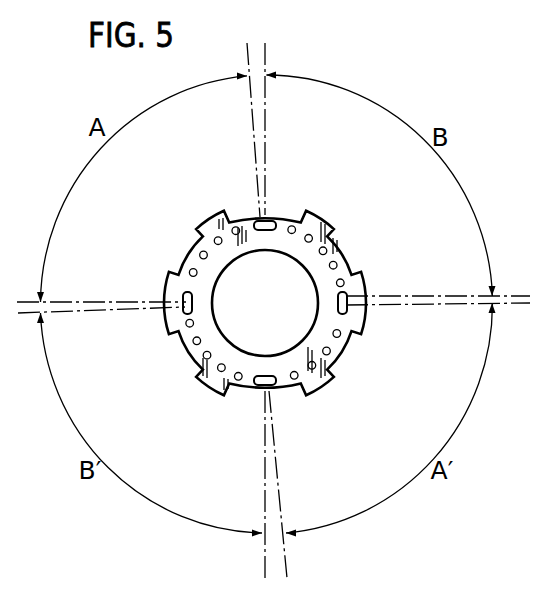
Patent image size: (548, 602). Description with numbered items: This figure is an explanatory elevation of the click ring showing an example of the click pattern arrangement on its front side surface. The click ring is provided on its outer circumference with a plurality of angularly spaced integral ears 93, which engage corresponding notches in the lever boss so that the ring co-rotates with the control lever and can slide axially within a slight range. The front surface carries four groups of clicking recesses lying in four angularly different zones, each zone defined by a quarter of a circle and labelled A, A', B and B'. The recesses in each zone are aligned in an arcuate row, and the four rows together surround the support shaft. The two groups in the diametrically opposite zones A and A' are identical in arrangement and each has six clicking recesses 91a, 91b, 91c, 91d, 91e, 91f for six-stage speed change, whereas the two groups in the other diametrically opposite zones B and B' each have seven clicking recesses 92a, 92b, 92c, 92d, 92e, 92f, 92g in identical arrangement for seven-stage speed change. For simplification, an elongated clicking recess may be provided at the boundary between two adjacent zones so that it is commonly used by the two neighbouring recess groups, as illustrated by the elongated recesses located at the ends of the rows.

The ears 93 is at (197, 230).
The clicking recess 91a is at (190, 272).
The clicking recess 91b is at (178, 268).
The clicking recess 91c is at (203, 254).
The clicking recess 91d is at (219, 240).
The clicking recess 91e is at (236, 230).
The clicking recess 91f is at (258, 221).
The clicking recess 92a is at (282, 217).
The clicking recess 92b is at (294, 226).
The clicking recess 92c is at (312, 237).
The clicking recess 92d is at (326, 250).
The clicking recess 92e is at (336, 265).
The clicking recess 92f is at (344, 282).
The clicking recess 92g is at (350, 297).